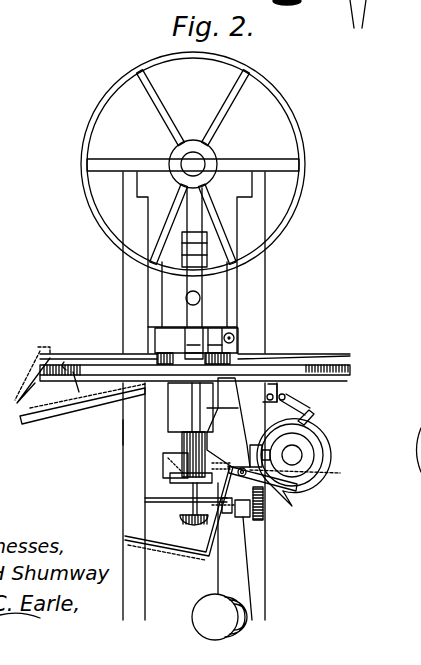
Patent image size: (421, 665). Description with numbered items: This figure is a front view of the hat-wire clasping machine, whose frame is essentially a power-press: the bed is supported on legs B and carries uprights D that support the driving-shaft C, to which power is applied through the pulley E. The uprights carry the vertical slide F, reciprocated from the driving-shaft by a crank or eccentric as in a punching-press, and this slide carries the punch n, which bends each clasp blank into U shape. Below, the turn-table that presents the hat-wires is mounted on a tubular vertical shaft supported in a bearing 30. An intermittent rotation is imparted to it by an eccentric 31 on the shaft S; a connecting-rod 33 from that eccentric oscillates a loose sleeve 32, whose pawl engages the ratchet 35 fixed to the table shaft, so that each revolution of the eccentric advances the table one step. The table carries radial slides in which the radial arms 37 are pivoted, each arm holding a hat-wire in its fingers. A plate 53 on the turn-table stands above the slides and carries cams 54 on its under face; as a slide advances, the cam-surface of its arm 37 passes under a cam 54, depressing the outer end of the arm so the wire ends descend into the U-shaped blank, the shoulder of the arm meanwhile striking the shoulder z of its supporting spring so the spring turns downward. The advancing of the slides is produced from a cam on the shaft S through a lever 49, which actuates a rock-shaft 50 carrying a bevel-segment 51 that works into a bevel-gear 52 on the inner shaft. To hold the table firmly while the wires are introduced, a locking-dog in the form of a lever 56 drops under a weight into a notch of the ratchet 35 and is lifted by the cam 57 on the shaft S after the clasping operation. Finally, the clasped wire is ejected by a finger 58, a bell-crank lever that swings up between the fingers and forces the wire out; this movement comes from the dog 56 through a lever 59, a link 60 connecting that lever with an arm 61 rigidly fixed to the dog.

The pulley E is at (197, 164).
The driving-shaft C is at (193, 164).
The uprights D is at (194, 262).
The vertical slide F is at (200, 302).
The plate 53 is at (196, 340).
The punch n is at (193, 340).
The shoulder of the spring z is at (215, 339).
The radial arm 37 is at (195, 350).
The ejecting-finger 58 is at (33, 375).
The lever 59 is at (82, 404).
The bearing 30 is at (190, 407).
The legs B is at (200, 501).
The link 60 is at (132, 432).
The loose sleeve 32 is at (184, 454).
The cams 54 is at (175, 465).
The ratchet 35 is at (186, 494).
The bevel-segment 51 is at (186, 499).
The bevel-gear 52 is at (182, 523).
The rock-shaft 50 is at (240, 517).
The locking-dog lever 56 is at (254, 477).
The arm 61 is at (179, 515).
The connecting-rod 33 is at (228, 422).
The lever 49 is at (257, 445).
The eccentric 31 is at (298, 458).
The shaft S is at (292, 455).
The cam 57 is at (301, 477).